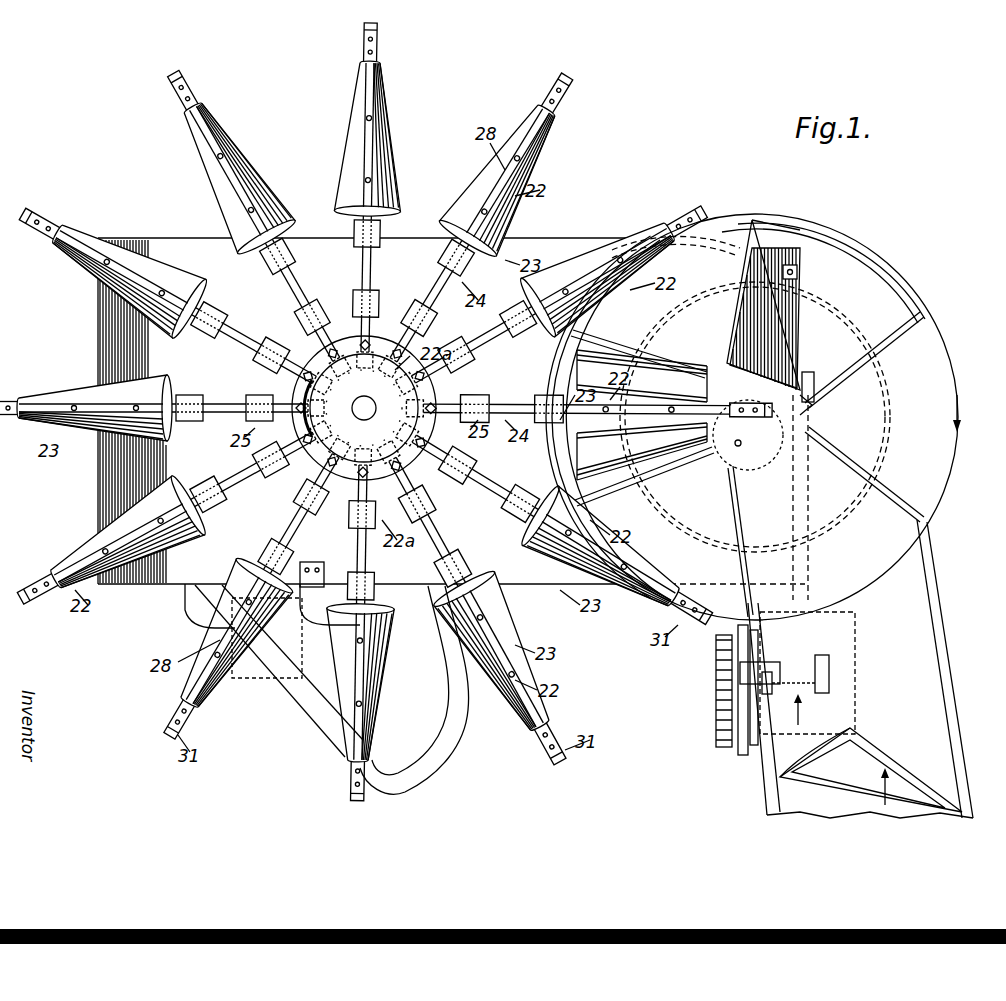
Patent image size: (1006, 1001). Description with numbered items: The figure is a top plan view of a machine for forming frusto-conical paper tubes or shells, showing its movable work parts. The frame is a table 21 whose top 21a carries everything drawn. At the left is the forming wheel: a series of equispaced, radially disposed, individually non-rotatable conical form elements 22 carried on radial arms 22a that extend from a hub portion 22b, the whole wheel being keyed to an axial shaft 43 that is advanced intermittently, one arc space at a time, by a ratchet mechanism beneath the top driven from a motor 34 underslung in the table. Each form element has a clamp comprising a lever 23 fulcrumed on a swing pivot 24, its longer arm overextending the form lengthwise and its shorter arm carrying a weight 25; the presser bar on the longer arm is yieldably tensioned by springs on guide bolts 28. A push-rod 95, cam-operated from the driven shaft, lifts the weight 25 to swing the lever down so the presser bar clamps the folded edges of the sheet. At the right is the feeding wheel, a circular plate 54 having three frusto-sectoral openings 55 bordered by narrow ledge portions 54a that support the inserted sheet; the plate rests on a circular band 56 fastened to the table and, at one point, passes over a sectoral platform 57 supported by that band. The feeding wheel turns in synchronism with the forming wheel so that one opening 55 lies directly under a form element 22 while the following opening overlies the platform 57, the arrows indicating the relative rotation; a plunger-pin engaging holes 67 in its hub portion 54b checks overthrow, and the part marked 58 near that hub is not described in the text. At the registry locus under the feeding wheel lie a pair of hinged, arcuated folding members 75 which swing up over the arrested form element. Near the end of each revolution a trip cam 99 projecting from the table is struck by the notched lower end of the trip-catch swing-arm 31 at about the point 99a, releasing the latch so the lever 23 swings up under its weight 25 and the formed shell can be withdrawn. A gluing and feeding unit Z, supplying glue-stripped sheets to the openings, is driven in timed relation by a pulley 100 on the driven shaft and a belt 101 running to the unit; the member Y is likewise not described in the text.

The table 21 is at (451, 394).
The top 21a is at (112, 338).
The form elements 22 is at (245, 170).
The radial arms or bars 22a is at (305, 300).
The hub portion 22b is at (378, 332).
The lever 23 is at (252, 200).
The swing pivot 24 is at (350, 236).
The weight 25 is at (264, 345).
The guide bolts 28 is at (128, 268).
The trip-catch swing-arm 31 is at (350, 770).
The motor 34 is at (205, 590).
The axial shaft 43 is at (364, 398).
The circular plate 54 is at (940, 365).
The ledge or shelf portions 54a is at (890, 335).
The hub portion 54b is at (815, 405).
The openings 55 is at (905, 300).
The circular band or track 56 is at (835, 305).
The sectoral platform 57 is at (738, 528).
The bearing ring 58 is at (748, 435).
The holes 67 is at (804, 303).
The folding members 75 is at (648, 450).
The push-rod 95 is at (470, 396).
The trip cam 99 is at (310, 712).
The point 99a is at (380, 780).
The pulley 100 is at (815, 376).
The driving belt 101 is at (815, 505).
The station Y is at (445, 625).
The unit Z is at (844, 669).